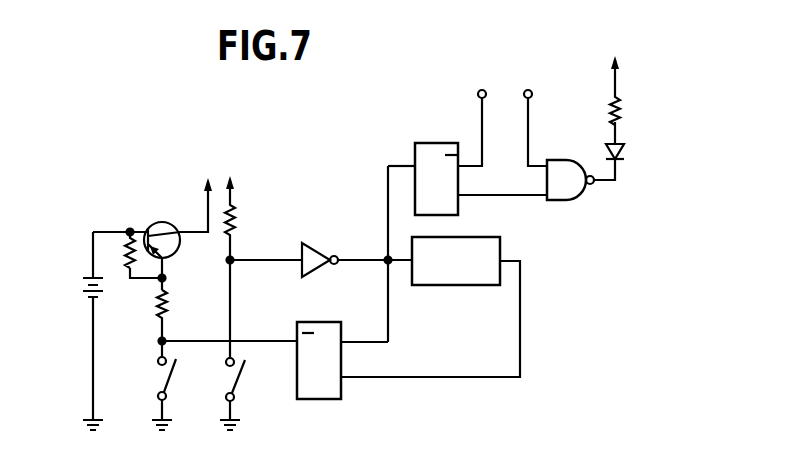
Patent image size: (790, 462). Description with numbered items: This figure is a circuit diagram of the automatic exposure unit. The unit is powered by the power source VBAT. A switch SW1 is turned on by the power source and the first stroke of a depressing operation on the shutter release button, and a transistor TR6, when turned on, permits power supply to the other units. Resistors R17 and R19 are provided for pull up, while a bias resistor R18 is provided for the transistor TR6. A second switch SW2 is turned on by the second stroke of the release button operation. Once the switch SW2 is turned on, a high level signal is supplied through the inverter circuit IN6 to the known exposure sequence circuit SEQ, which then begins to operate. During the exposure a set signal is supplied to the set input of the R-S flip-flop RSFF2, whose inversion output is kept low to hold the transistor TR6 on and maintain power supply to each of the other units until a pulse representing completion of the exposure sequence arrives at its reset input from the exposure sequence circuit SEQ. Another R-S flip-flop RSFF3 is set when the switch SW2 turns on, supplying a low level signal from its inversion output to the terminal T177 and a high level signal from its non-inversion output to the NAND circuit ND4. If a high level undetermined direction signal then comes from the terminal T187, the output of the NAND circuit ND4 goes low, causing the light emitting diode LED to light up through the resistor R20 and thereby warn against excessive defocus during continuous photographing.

The power source VBAT is at (84, 287).
The pull-up resistor R17 is at (127, 238).
The transistor TR6 is at (160, 222).
The bias resistor R18 is at (170, 305).
The switch SW1 is at (172, 364).
The pull-up resistor R19 is at (235, 227).
The switch SW2 is at (243, 377).
The inverter circuit IN6 is at (313, 243).
The R-S flip-flop RSFF3 is at (433, 143).
The terminal T177 is at (479, 112).
The terminal T187 is at (535, 112).
The NAND circuit ND4 is at (585, 201).
The light emitting diode LED is at (626, 152).
The resistor R20 is at (622, 106).
The exposure sequence circuit SEQ is at (450, 286).
The R-S flip-flop RSFF2 is at (320, 399).